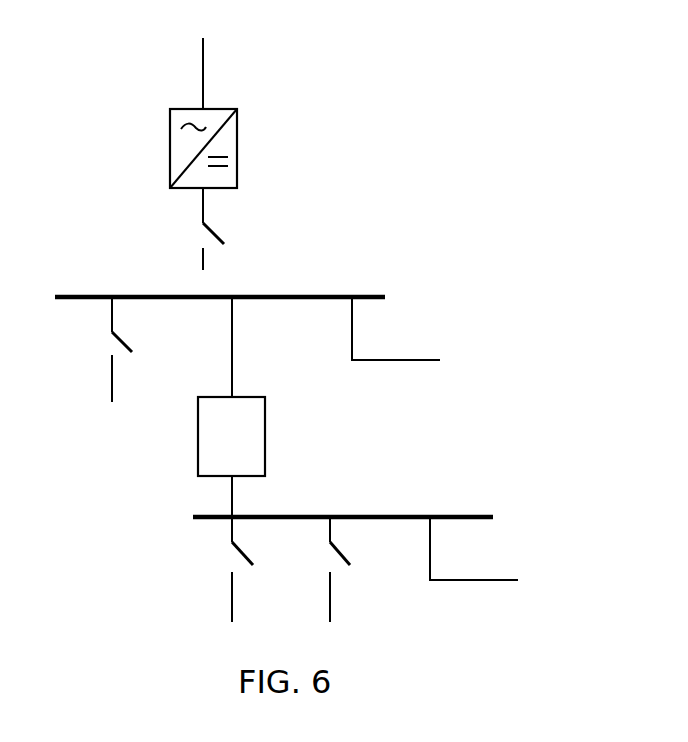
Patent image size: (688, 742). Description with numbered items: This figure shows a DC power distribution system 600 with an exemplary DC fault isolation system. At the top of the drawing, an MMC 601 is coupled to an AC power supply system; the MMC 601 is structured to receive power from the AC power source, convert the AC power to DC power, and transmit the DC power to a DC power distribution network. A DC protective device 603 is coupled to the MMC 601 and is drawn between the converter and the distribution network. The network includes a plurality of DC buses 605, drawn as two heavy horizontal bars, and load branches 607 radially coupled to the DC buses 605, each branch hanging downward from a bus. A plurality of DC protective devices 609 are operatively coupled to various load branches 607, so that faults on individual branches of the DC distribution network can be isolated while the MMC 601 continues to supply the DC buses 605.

The DC power distribution system 600 is at (477, 169).
The MMC 601 is at (237, 118).
The DC protective device 603 is at (213, 233).
The DC buses 605 is at (326, 293).
The load branches 607 is at (114, 308).
The DC protective devices 609 is at (124, 345).